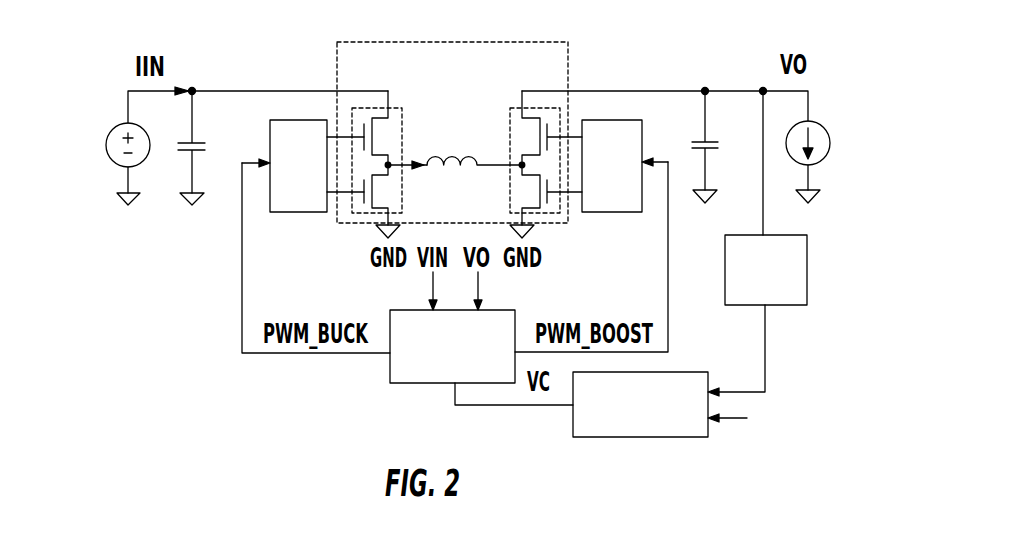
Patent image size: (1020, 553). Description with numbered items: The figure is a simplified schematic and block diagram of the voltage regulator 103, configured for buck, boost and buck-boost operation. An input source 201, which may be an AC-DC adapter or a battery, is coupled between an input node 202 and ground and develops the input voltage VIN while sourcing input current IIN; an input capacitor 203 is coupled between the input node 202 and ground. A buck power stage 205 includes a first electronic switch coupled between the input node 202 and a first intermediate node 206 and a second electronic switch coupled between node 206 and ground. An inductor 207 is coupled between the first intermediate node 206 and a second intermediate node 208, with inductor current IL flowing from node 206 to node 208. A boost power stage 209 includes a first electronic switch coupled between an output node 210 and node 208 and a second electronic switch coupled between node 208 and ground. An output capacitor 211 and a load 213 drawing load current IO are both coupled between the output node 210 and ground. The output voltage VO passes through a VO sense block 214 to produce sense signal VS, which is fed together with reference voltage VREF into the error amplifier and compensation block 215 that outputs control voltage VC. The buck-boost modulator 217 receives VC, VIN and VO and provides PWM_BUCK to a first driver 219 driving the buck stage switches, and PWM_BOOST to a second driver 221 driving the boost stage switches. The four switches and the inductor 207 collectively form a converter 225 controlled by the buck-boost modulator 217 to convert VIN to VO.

The voltage regulator 103 is at (176, 297).
The input source 201 is at (112, 129).
The input node 202 is at (194, 89).
The input capacitor 203 is at (193, 140).
The buck power stage 205 is at (402, 118).
The first intermediate node 206 is at (390, 167).
The inductor 207 is at (468, 157).
The second intermediate node 208 is at (520, 167).
The boost power stage 209 is at (510, 118).
The output node 210 is at (706, 89).
The output capacitor 211 is at (694, 141).
The load 213 is at (822, 126).
The VO sense block 214 is at (807, 268).
The error amplifier and compensation block 215 is at (674, 371).
The buck-boost modulator 217 is at (515, 310).
The first driver 219 is at (307, 212).
The second driver 221 is at (612, 212).
The converter 225 is at (568, 52).